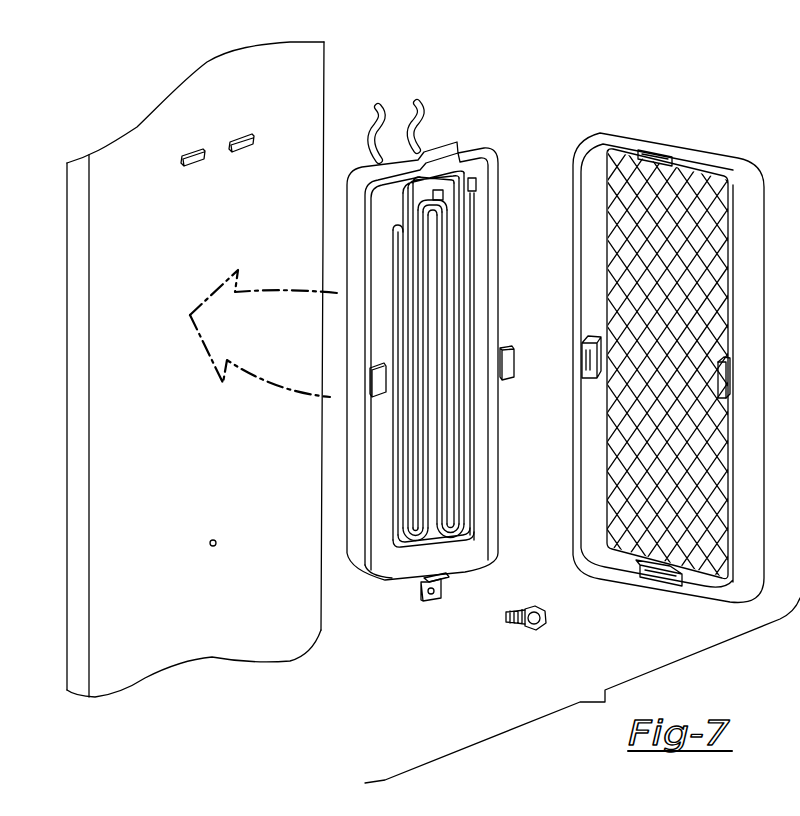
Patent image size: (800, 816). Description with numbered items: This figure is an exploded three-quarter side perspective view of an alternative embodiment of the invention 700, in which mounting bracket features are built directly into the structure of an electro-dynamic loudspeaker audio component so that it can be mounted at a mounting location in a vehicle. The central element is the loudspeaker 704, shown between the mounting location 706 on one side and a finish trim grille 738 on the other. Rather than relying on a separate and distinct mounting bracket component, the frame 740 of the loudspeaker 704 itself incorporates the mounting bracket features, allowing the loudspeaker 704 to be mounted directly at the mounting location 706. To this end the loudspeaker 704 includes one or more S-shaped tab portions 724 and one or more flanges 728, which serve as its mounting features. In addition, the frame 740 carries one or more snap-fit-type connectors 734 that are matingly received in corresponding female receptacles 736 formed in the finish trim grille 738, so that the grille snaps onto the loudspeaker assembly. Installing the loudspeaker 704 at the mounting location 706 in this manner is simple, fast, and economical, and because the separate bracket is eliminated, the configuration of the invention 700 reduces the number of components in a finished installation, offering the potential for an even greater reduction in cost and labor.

The invention 700 is at (551, 328).
The loudspeaker 704 is at (496, 155).
The mounting location 706 is at (90, 108).
The S-shaped tab portion 724 is at (417, 102).
The flange 728 is at (433, 601).
The snap-fit-type connector 734 is at (507, 347).
The female receptacle 736 is at (582, 364).
The finish trim grille 738 is at (551, 329).
The frame 740 is at (366, 555).